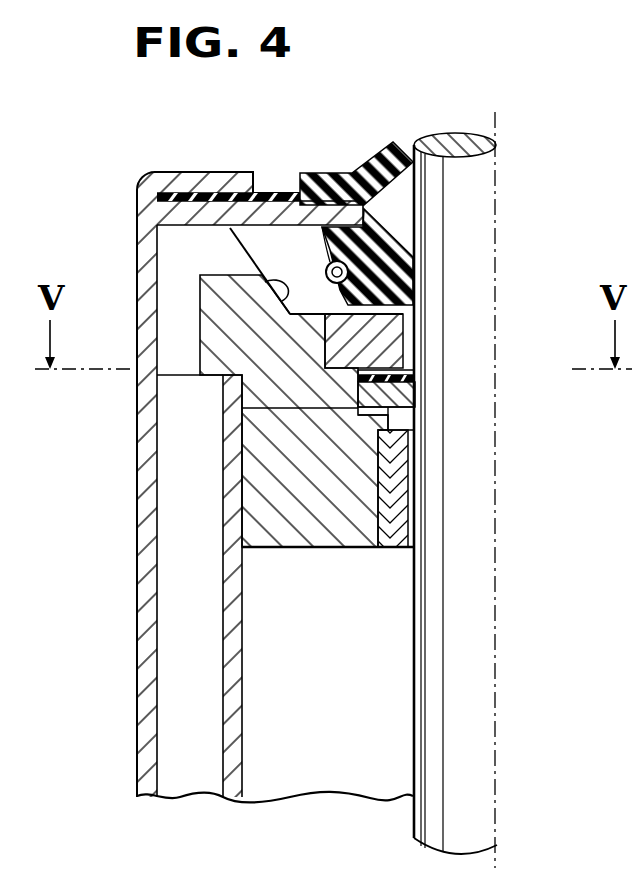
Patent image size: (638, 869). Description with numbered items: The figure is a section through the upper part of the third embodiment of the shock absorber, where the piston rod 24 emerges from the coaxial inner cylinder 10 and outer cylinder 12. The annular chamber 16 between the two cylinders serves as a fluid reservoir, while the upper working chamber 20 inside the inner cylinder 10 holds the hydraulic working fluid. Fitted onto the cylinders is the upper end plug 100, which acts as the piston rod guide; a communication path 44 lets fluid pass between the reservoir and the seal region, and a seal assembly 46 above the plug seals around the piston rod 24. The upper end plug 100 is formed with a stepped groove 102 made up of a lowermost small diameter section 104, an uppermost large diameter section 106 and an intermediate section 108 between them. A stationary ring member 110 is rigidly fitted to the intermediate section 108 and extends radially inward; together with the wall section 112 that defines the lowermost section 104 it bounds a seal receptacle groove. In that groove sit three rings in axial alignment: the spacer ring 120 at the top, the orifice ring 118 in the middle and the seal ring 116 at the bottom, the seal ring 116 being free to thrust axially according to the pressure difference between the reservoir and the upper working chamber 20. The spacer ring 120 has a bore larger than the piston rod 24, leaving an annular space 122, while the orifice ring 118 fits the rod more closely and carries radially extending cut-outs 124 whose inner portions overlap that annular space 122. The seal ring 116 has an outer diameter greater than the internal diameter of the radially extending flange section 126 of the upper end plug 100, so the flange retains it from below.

The inner cylinder 10 is at (240, 640).
The outer cylinder 12 is at (140, 622).
The annular chamber 16 is at (170, 716).
The upper working chamber 20 is at (368, 655).
The piston rod 24 is at (473, 470).
The communication path 44 is at (172, 243).
The seal assembly 46 is at (348, 172).
The upper end plug 100 is at (270, 462).
The stepped groove 102 is at (312, 265).
The lowermost small diameter section 104 is at (300, 405).
The uppermost large diameter section 106 is at (283, 301).
The intermediate section 108 is at (295, 375).
The stationary ring member 110 is at (405, 328).
The wall section 112 is at (400, 308).
The seal ring 116 is at (400, 398).
The orifice ring 118 is at (413, 378).
The spacer ring 120 is at (410, 355).
The annular space 122 is at (413, 372).
The cut-outs 124 is at (405, 460).
The flange section 126 is at (380, 430).